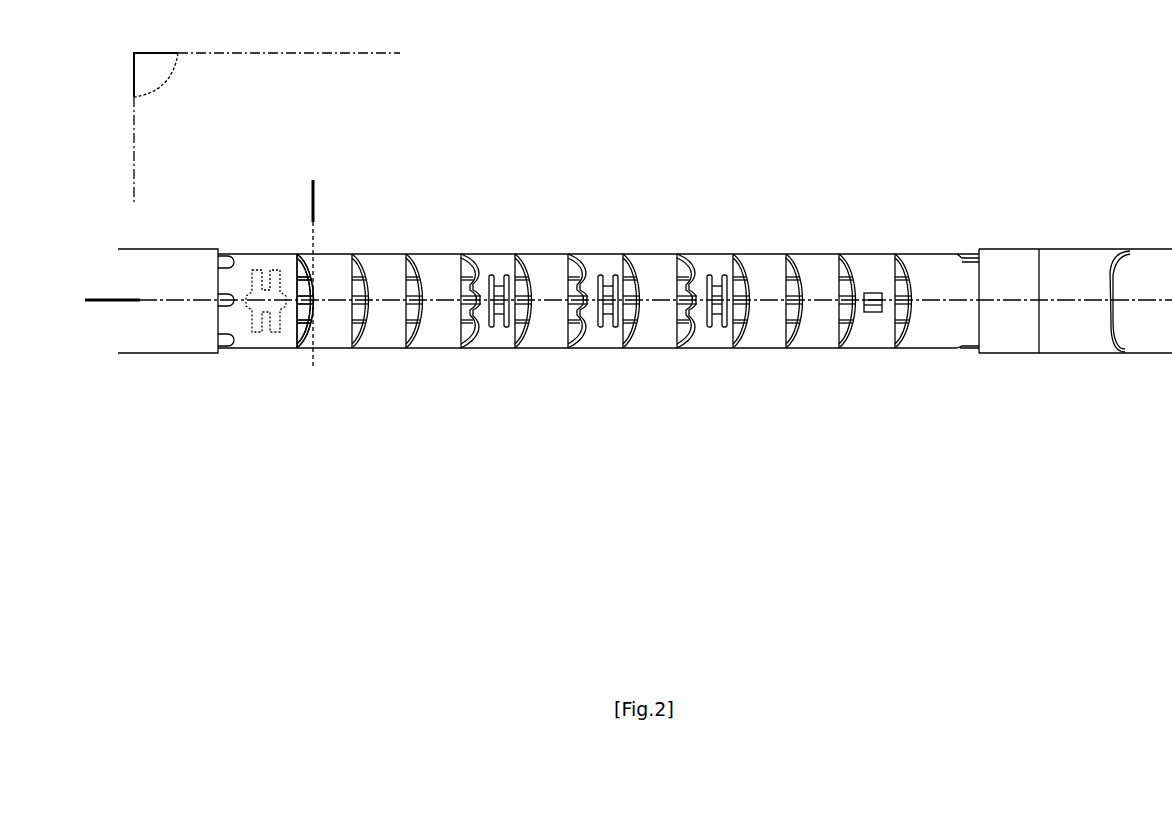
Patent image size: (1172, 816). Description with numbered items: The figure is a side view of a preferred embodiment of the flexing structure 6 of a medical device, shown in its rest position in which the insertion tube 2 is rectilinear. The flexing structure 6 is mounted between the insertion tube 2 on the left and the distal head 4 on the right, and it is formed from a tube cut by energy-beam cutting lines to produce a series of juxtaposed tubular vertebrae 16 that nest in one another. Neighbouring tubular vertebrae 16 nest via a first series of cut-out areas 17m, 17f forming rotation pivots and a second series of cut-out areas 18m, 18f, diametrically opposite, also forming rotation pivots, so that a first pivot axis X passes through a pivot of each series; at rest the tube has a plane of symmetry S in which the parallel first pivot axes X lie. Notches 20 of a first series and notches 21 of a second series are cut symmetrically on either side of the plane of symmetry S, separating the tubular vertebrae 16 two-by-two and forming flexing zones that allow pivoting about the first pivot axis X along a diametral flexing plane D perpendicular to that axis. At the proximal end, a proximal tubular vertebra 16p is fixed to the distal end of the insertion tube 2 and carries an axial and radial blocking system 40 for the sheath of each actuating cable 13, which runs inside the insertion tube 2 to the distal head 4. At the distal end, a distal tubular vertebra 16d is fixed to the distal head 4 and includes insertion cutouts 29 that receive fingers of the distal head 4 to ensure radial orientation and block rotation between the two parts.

The insertion tube 2 is at (158, 262).
The distal head 4 is at (995, 250).
The flexing structure 6 is at (757, 392).
The actuating cable 13 is at (712, 270).
The tubular vertebrae 16 is at (553, 268).
The proximal tubular vertebra 16p is at (265, 340).
The distal tubular vertebra 16d is at (928, 268).
The cut-out area of the first series 17m is at (310, 257).
The cut-out area of the first series 17f is at (340, 250).
The cut-out area of the second series 18m is at (305, 352).
The cut-out area of the second series 18f is at (338, 366).
The notches of the first series 20 is at (522, 332).
The notches of the second series 21 is at (632, 330).
The insertion cutouts 29 is at (970, 254).
The axial and radial blocking system 40 is at (233, 356).
The diametral flexing plane D is at (113, 298).
The plane of symmetry S is at (267, 129).
The first pivot axis X is at (311, 200).